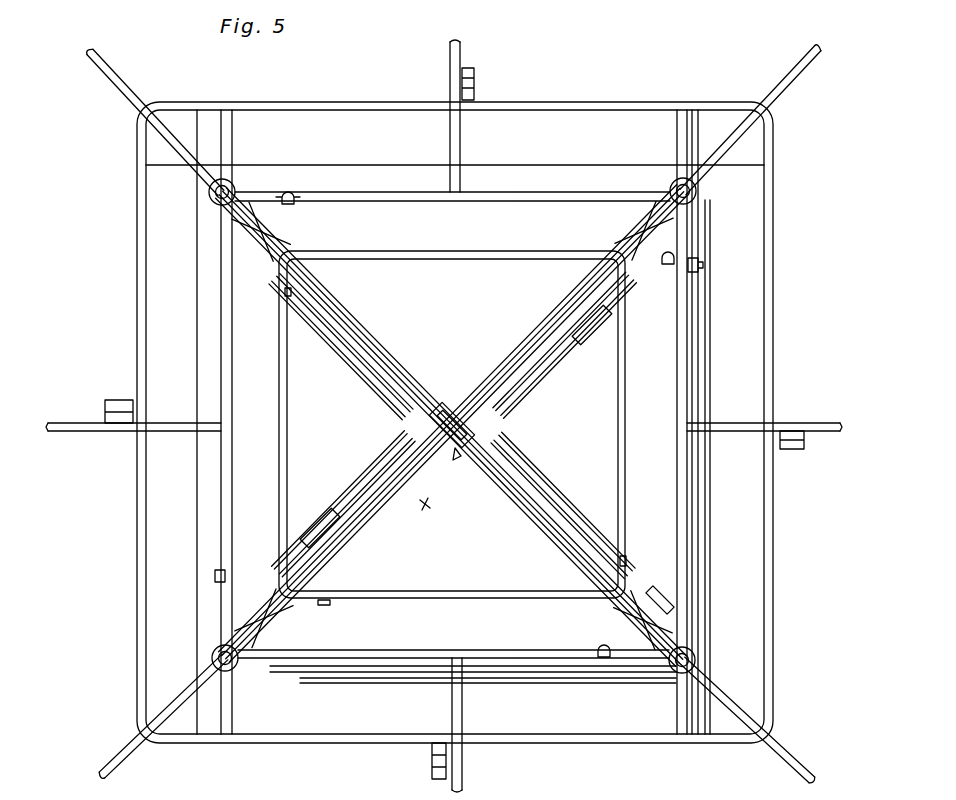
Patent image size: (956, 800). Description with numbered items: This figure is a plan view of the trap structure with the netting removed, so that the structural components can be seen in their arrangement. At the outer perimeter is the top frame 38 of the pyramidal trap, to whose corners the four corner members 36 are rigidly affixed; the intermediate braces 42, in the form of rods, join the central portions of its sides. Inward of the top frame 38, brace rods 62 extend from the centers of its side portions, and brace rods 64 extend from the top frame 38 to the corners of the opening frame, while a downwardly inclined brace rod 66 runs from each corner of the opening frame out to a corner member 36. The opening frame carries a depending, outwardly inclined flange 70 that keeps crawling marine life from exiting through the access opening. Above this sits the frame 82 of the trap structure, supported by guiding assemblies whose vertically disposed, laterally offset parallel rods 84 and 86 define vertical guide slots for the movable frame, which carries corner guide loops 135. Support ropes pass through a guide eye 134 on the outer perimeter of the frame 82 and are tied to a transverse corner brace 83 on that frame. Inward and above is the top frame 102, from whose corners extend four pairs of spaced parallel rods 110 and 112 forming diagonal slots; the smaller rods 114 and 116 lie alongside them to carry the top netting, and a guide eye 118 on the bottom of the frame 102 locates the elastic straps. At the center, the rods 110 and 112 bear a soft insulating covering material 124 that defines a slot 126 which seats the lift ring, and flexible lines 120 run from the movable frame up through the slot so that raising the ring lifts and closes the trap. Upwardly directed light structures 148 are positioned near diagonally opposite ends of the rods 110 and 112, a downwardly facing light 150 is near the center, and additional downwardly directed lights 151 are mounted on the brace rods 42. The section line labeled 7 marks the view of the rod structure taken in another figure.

The section line 7 is at (478, 340).
The corner member 36 is at (800, 72).
The top frame 38 is at (766, 276).
The intermediate brace 42 is at (820, 422).
The brace rod 62 is at (462, 142).
The brace rod 64 is at (688, 108).
The downwardly inclined brace rod 66 is at (742, 702).
The depending flange 70 is at (700, 540).
The frame 82 is at (692, 333).
The transverse corner brace 83 is at (660, 592).
The rod 84 is at (292, 206).
The rod 86 is at (700, 266).
The top frame 102 is at (488, 252).
The rod 110 is at (672, 225).
The rod 112 is at (625, 195).
The smaller rod 114 is at (604, 335).
The smaller rod 116 is at (468, 372).
The guide eye 118 is at (285, 292).
The flexible line 120 is at (128, 725).
The soft insulating covering material 124 is at (456, 458).
The slot 126 is at (430, 428).
The guide eye 134 is at (690, 180).
The corner guide loop 135 is at (236, 183).
The upwardly directed light structure 148 is at (326, 525).
The downwardly facing light 150 is at (426, 506).
The downwardly and centrally directed light 151 is at (476, 80).